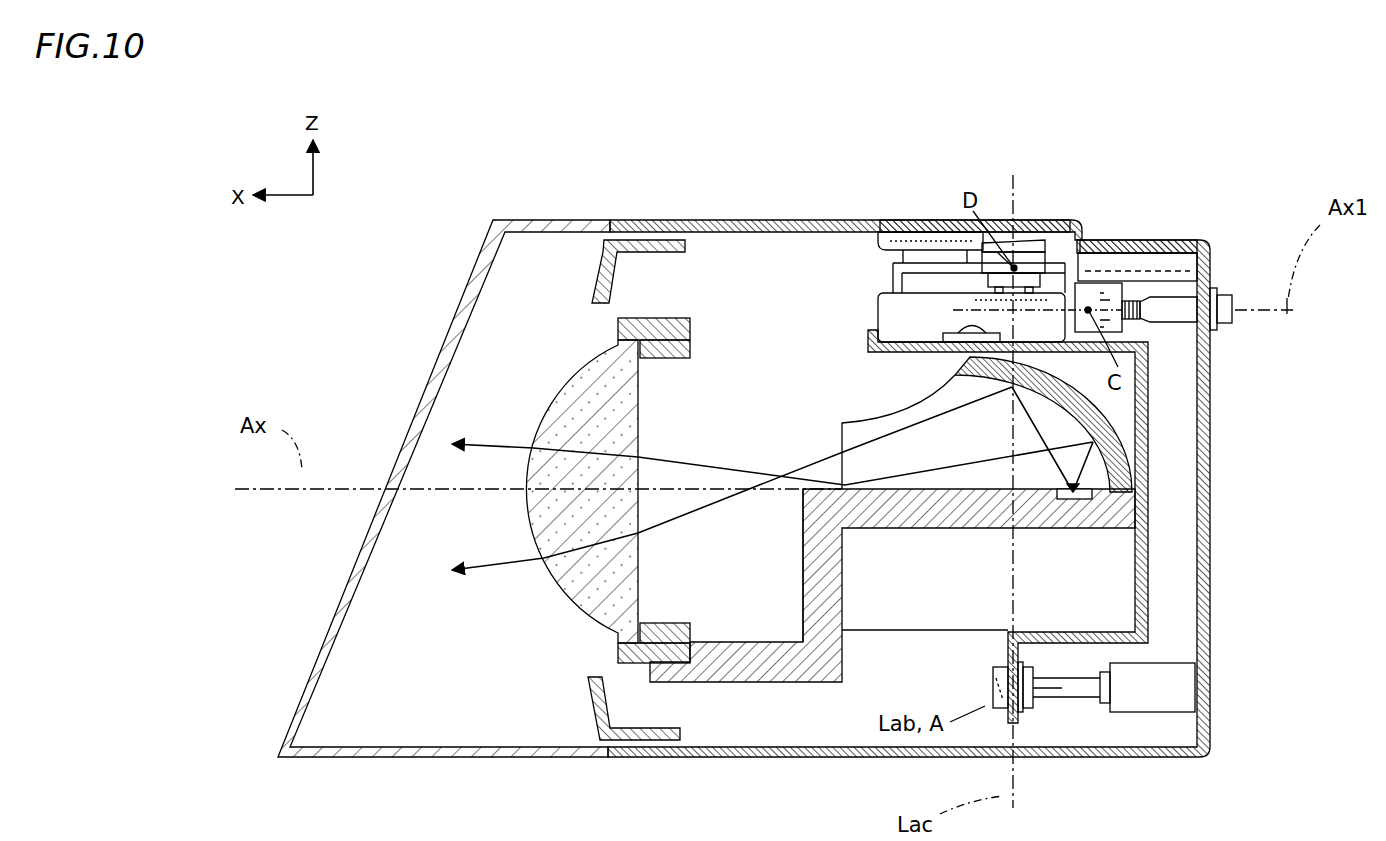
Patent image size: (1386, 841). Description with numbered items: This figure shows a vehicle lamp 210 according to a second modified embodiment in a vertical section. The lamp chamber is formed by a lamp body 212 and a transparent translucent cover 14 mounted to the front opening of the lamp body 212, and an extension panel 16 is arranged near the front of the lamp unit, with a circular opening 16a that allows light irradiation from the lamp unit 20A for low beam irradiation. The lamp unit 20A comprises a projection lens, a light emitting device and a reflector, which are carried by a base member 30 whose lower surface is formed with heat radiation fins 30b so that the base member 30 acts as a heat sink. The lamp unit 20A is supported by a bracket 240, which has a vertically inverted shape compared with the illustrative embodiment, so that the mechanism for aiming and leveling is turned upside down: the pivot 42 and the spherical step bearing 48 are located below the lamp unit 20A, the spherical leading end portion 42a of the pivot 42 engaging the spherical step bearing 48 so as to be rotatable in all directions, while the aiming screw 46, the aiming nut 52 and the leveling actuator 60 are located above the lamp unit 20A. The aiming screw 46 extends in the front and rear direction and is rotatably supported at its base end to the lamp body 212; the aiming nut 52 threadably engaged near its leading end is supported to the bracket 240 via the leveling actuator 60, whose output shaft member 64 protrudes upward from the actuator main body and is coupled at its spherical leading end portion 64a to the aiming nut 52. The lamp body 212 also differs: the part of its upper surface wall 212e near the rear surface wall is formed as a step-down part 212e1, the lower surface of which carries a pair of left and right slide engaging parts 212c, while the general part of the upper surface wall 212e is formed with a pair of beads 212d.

The vehicle lamp 210 is at (580, 145).
The lamp body 212 is at (1218, 540).
The slide engaging parts 212c is at (1124, 262).
The beads 212d is at (882, 226).
The upper surface wall 212e is at (921, 224).
The step-down part 212e1 is at (1152, 246).
The translucent cover 14 is at (452, 300).
The extension panel 16 is at (588, 268).
The circular openings 16a is at (595, 675).
The lamp unit 20A is at (500, 386).
The bracket 240 is at (1154, 470).
The base member 30 is at (1074, 541).
The heat radiation fins 30b is at (875, 575).
The leveling actuator 60 is at (871, 290).
The output shaft member 64 is at (1018, 292).
The leading end portion 64a is at (1022, 240).
The aiming screw 46 is at (1172, 295).
The aiming nut 52 is at (1128, 325).
The spherical step bearing 48 is at (990, 667).
The pivot 42 is at (1065, 706).
The leading end portion 42a is at (995, 686).